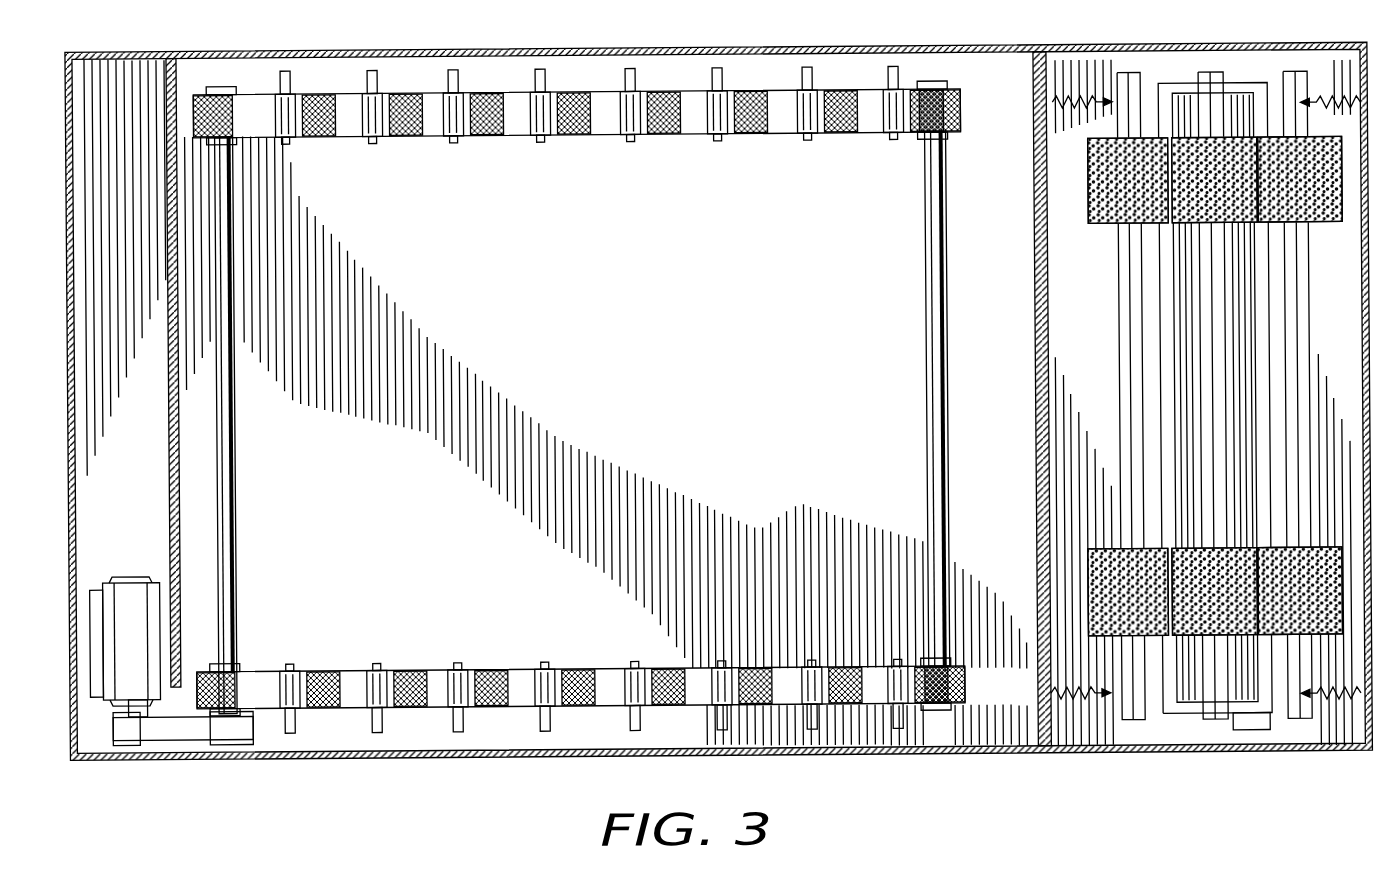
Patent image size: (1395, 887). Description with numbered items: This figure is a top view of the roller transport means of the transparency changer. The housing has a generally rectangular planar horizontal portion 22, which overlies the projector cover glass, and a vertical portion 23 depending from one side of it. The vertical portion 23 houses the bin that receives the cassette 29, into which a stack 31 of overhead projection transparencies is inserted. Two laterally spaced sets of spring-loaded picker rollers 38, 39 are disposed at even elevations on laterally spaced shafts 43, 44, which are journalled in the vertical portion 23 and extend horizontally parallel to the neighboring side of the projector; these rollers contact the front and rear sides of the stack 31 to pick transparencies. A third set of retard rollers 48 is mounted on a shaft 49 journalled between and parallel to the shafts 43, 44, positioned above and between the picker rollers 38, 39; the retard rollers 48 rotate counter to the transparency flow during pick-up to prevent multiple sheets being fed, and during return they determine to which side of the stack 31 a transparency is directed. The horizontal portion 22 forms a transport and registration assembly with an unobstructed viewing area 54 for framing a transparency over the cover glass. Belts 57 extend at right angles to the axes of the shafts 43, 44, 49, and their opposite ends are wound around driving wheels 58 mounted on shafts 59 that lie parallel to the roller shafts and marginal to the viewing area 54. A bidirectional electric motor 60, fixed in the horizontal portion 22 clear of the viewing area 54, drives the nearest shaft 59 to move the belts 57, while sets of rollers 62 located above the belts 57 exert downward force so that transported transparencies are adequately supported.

The horizontal portion 22 is at (308, 48).
The vertical portion 23 is at (1136, 54).
The cassette 29 is at (1260, 736).
The transparency stack 31 is at (1248, 309).
The picker rollers 38 is at (1150, 200).
The picker rollers 39 is at (1320, 202).
The shaft 43 is at (1123, 341).
The shaft 44 is at (1307, 333).
The retard rollers 48 is at (1234, 201).
The shaft 49 is at (1228, 447).
The viewing area 54 is at (582, 378).
The belts 57 is at (505, 134).
The driving wheels 58 is at (239, 141).
The shafts 59 is at (236, 483).
The bidirectional electric motor 60 is at (132, 603).
The rollers 62 is at (446, 135).